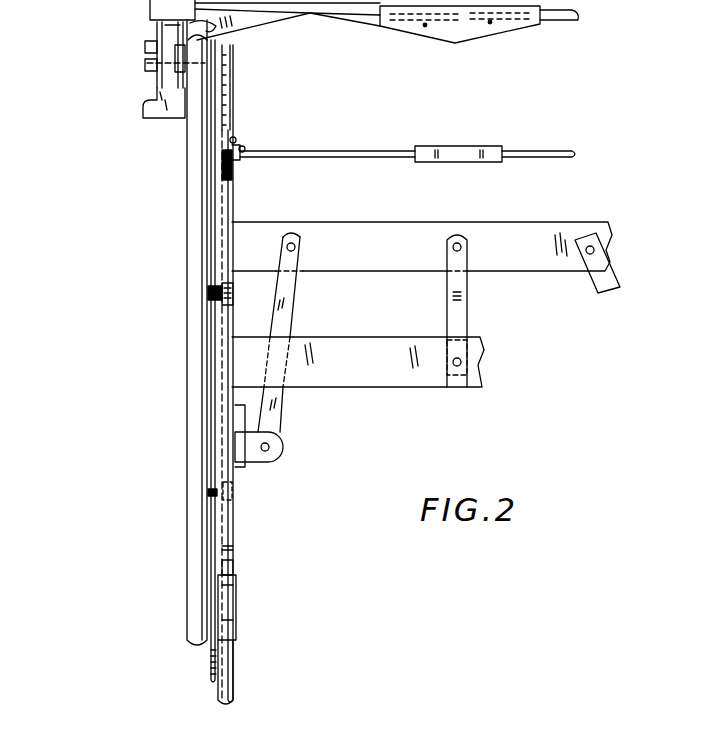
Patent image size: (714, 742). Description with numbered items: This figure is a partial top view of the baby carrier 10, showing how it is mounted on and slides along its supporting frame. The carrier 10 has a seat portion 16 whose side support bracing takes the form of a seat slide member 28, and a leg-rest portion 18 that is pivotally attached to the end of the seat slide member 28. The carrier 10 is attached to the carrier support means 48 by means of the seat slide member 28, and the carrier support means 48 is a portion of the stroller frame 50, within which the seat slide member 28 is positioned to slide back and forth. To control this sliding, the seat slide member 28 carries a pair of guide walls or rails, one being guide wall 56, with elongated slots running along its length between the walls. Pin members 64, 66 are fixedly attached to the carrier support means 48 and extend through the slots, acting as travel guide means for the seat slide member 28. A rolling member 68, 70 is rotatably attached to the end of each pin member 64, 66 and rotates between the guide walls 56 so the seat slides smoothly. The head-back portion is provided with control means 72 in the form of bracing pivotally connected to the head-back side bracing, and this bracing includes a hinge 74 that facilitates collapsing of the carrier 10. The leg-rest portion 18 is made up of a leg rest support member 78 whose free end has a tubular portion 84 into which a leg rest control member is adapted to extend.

The carrier 10 is at (78, 208).
The seat portion 16 is at (247, 192).
The leg-rest portion 18 is at (246, 649).
The seat slide member 28 is at (242, 531).
The carrier support means 48 is at (186, 204).
The carrier support frame 50 is at (188, 408).
The guide wall 56 is at (233, 548).
The pin member 64 is at (208, 492).
The pin member 66 is at (210, 292).
The rolling member 68 is at (233, 494).
The rolling member 70 is at (232, 290).
The control means 72 is at (485, 130).
The hinge 74 is at (452, 133).
The leg rest support member 78 is at (233, 673).
The tubular portion 84 is at (222, 698).